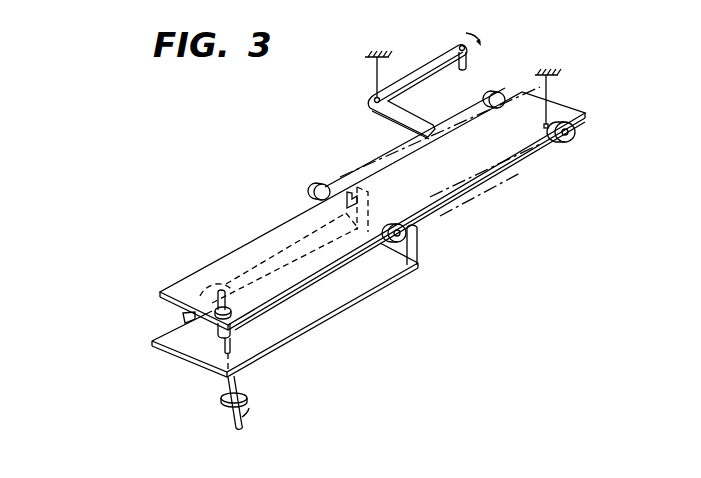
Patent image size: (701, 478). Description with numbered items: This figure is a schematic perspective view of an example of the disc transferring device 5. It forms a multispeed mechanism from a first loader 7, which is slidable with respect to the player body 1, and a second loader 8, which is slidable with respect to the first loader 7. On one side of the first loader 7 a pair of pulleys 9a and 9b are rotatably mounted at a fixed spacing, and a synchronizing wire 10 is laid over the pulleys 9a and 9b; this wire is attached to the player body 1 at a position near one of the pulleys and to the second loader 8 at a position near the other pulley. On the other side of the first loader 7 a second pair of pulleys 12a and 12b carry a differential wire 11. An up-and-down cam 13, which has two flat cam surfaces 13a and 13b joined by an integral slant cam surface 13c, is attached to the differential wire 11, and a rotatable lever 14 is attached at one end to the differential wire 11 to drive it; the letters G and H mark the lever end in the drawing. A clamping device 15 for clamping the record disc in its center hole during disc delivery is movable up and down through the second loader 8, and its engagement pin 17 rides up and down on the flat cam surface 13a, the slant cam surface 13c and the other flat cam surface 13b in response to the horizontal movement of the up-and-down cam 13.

The player body 1 is at (364, 58).
The disc transferring device 5 is at (181, 166).
The first loader 7 is at (230, 290).
The second loader 8 is at (323, 302).
The pulley 9a is at (572, 140).
The pulley 9b is at (420, 241).
The synchronizing wire 10 is at (506, 179).
The differential wire 11 is at (383, 150).
The pulley 12a is at (503, 94).
The pulley 12b is at (313, 183).
The up-and-down cam 13 is at (283, 252).
The flat cam surface 13a is at (185, 316).
The flat cam surface 13b is at (230, 280).
The slant cam surface 13c is at (205, 297).
The rotatable lever 14 is at (412, 76).
The clamping device 15 is at (226, 377).
The engagement pin 17 is at (196, 286).
The direction of rotation G is at (466, 33).
The pin H is at (473, 64).